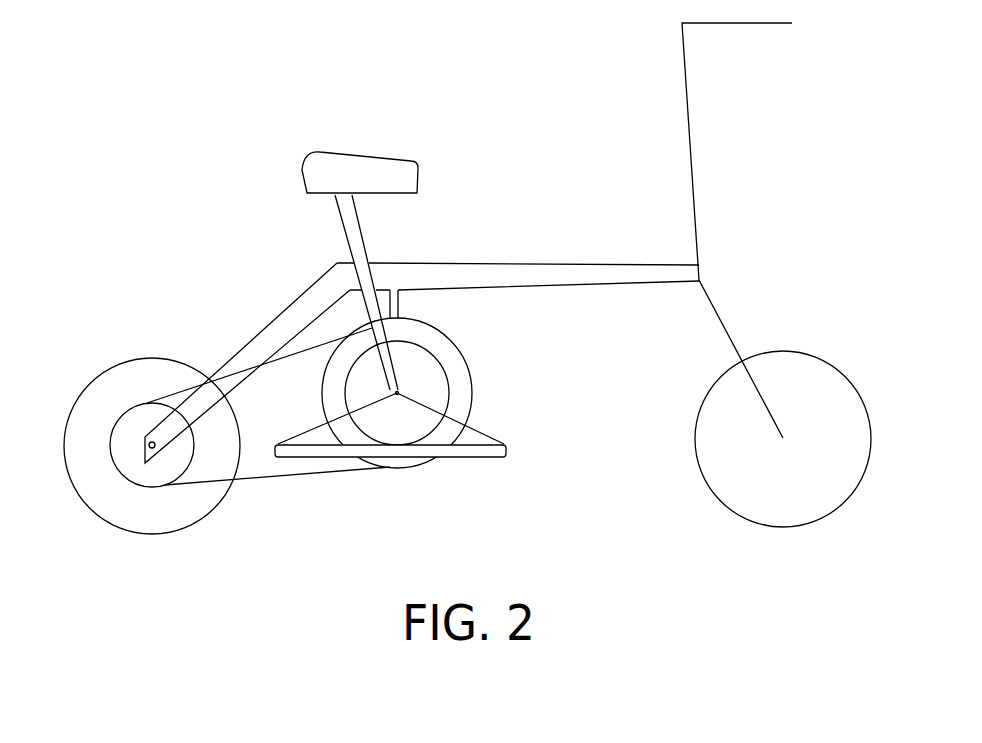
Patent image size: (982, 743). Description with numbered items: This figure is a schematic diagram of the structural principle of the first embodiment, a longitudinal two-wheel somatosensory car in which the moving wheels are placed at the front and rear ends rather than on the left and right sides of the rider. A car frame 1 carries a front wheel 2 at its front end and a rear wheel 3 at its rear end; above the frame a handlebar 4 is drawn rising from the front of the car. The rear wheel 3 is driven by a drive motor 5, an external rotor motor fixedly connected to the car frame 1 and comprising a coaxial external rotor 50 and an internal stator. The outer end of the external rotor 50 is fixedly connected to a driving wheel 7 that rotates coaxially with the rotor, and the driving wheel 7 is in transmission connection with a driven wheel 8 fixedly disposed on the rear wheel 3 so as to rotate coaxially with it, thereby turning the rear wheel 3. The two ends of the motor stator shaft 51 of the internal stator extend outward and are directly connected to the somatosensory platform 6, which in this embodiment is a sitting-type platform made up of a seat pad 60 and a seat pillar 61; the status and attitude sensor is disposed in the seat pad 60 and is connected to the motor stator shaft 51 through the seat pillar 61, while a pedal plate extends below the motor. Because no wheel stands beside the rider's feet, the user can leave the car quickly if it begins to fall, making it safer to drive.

The car frame 1 is at (265, 330).
The front wheel 2 is at (842, 372).
The rear wheel 3 is at (72, 406).
The handlebar 4 is at (758, 27).
The drive motor 5 is at (530, 322).
The external rotor 50 is at (428, 352).
The motor stator shaft 51 is at (397, 393).
The somatosensory platform 6 is at (457, 453).
The driving wheel 7 is at (470, 388).
The driven wheel 8 is at (126, 409).
The seat 60 is at (387, 172).
The seat post 61 is at (357, 252).